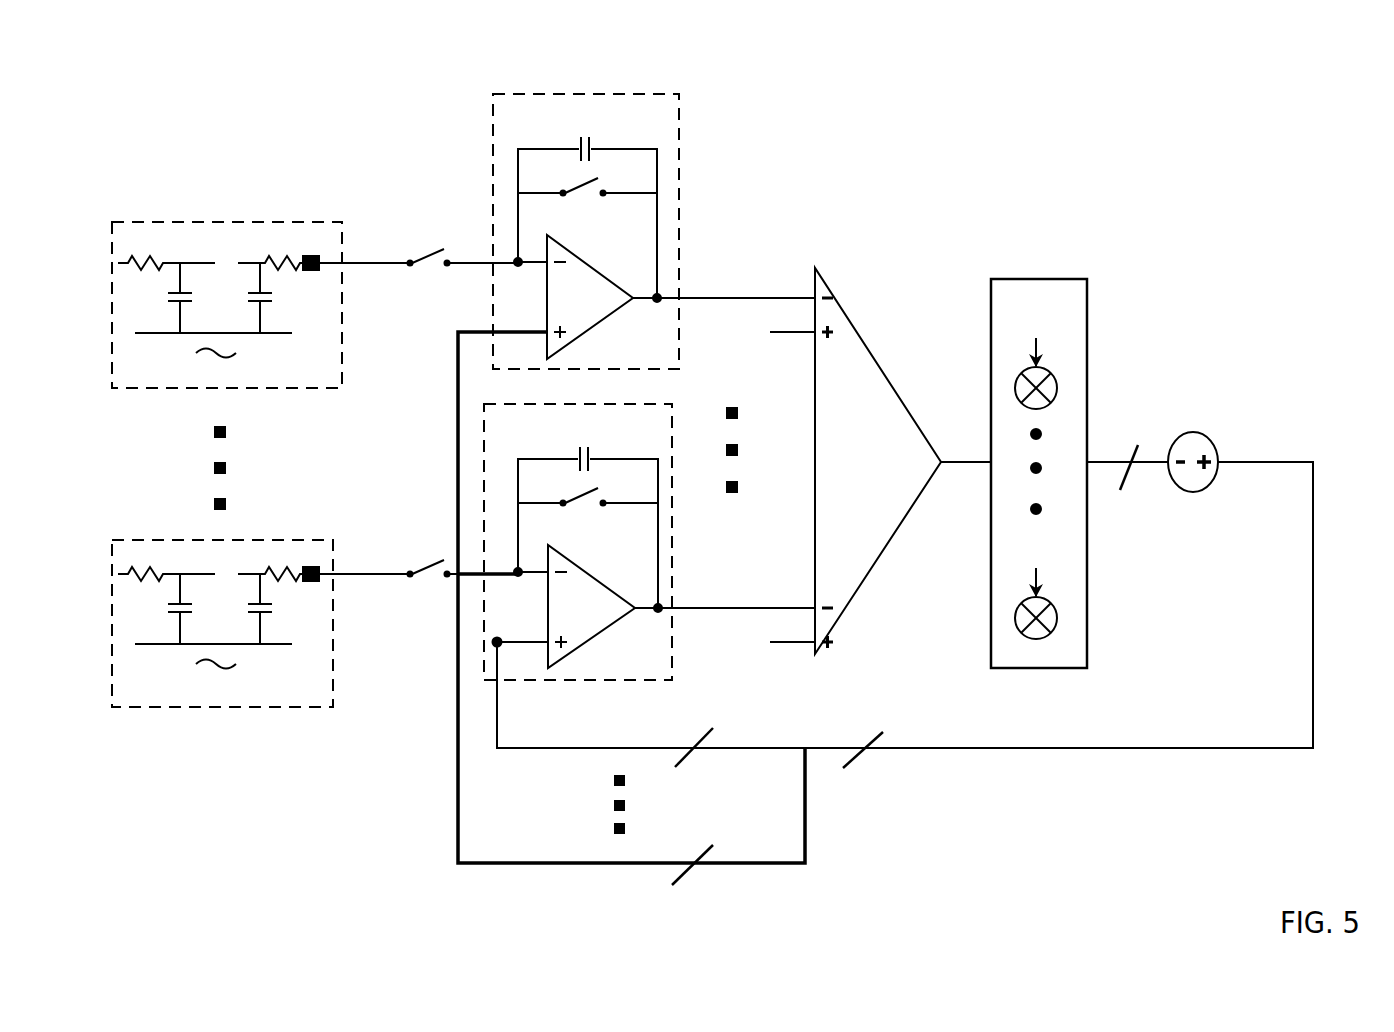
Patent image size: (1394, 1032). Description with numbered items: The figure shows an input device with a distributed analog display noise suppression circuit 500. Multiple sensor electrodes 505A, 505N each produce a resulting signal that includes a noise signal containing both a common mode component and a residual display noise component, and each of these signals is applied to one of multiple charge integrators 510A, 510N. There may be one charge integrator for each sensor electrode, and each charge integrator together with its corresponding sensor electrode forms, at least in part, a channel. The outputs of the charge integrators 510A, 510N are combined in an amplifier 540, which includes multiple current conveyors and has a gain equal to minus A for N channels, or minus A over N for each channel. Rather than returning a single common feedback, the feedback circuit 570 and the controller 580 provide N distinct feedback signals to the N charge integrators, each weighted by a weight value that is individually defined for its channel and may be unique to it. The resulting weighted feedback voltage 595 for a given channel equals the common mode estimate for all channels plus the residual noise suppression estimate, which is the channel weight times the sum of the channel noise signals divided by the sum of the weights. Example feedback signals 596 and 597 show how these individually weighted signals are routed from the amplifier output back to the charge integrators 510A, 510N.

The distributed analog display noise suppression (ADNS) circuit 500 is at (1186, 93).
The sensor electrode 505A is at (177, 217).
The sensor electrode 505N is at (248, 538).
The charge integrator 510A is at (527, 91).
The charge integrator 510N is at (618, 402).
The amplifier 540 is at (816, 264).
The feedback circuit 570 is at (1011, 277).
The controller 580 is at (1215, 490).
The weighted feedback voltage signal 595 is at (1099, 752).
The feedback signal 596 is at (513, 869).
The feedback signal 597 is at (584, 752).